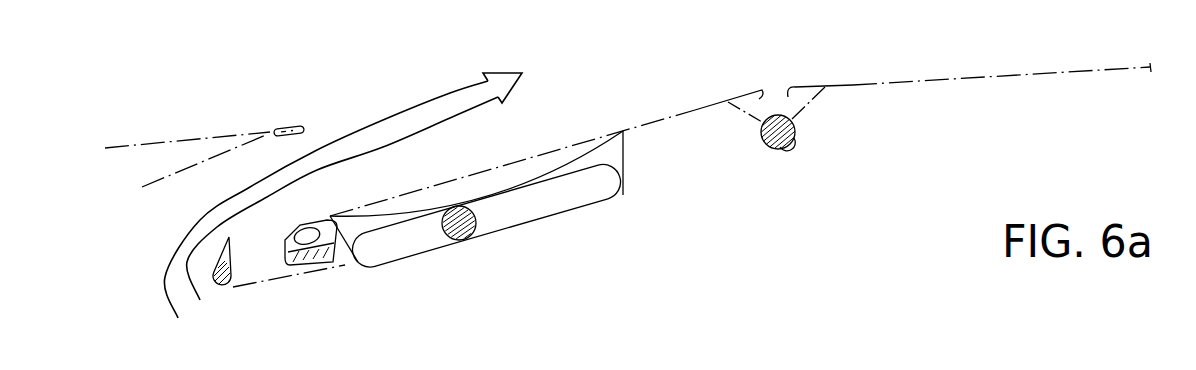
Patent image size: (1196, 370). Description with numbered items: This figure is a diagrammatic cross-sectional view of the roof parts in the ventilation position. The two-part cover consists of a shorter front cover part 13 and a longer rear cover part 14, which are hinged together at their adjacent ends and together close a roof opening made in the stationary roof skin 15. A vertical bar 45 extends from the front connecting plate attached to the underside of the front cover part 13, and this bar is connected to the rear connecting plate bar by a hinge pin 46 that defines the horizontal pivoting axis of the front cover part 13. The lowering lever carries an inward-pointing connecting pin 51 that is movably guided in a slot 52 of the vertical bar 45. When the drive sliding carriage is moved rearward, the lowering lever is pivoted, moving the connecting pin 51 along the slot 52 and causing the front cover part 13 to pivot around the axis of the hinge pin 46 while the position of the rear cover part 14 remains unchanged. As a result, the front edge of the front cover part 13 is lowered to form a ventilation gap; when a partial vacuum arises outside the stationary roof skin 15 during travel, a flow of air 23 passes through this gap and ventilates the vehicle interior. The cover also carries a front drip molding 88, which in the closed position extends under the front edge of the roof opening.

The front cover part 13 is at (663, 118).
The rear cover part 14 is at (1052, 70).
The stationary roof skin 15 is at (235, 132).
The flow of air 23 is at (382, 135).
The vertical bar 45 is at (603, 151).
The hinge pin 46 is at (783, 150).
The connecting pin 51 is at (462, 238).
The slot 52 is at (545, 197).
The front drip molding 88 is at (298, 275).